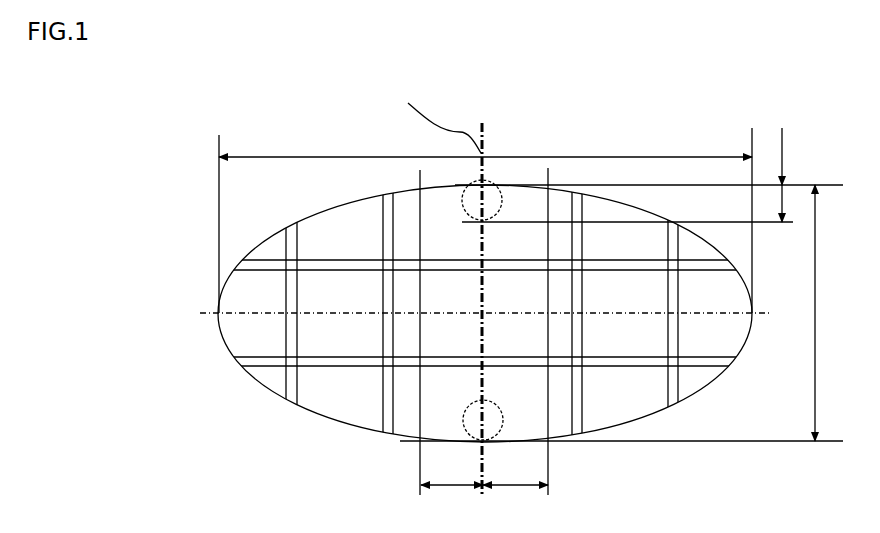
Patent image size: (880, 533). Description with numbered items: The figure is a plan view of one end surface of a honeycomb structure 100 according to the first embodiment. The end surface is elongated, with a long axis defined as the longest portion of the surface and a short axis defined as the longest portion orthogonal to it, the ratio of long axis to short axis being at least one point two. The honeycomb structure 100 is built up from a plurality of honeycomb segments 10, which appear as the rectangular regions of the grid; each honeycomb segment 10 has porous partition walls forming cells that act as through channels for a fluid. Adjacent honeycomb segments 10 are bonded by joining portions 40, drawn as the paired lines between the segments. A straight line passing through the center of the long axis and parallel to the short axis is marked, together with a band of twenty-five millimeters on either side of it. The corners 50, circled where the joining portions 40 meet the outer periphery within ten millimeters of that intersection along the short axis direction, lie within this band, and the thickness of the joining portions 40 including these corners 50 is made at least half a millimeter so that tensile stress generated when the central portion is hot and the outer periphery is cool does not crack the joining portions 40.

The honeycomb structure 100 is at (792, 86).
The honeycomb segment 10 is at (348, 397).
The joining portion 40 is at (297, 405).
The corner 50 is at (497, 190).